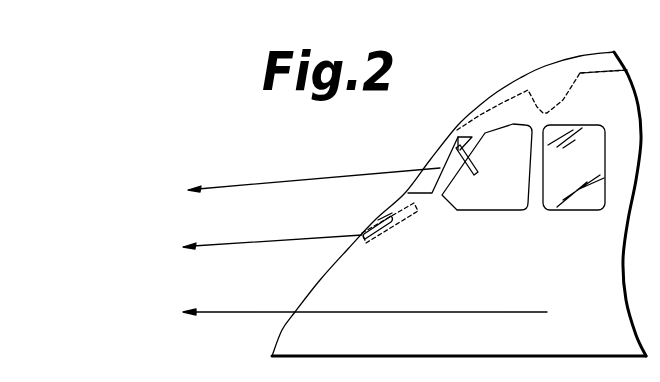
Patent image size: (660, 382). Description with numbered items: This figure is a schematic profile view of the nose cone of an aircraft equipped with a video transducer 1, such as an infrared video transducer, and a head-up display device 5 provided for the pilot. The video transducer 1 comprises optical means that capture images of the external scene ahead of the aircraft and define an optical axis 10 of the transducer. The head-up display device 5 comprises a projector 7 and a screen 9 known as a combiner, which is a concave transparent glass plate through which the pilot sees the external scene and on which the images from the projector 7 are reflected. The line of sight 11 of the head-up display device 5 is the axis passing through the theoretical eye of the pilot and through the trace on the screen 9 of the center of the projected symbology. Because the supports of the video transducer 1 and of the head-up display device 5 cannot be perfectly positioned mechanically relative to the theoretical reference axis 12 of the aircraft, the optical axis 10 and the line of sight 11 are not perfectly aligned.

The video transducer 1 is at (358, 226).
The head-up display device 5 is at (553, 92).
The projector 7 is at (603, 63).
The screen 9 is at (473, 174).
The optical axis 10 is at (252, 244).
The line of sight 11 is at (276, 181).
The theoretical reference axis 12 is at (276, 312).